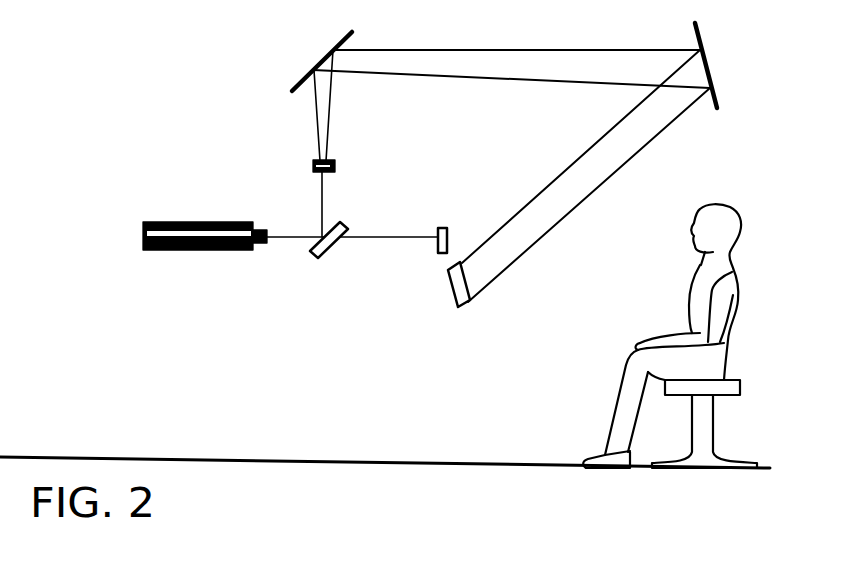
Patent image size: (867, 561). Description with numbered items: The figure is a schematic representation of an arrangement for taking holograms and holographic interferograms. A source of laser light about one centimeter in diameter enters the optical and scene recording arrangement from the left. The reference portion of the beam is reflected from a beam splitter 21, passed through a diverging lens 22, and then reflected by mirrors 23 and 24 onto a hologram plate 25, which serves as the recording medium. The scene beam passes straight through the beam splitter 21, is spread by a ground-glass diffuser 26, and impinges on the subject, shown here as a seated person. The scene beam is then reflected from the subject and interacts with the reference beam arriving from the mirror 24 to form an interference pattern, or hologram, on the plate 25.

The beam splitter 21 is at (313, 257).
The diverging lens 22 is at (336, 167).
The mirror 23 is at (318, 52).
The mirror 24 is at (713, 61).
The hologram plate 25 is at (451, 289).
The ground-glass diffuser 26 is at (422, 205).